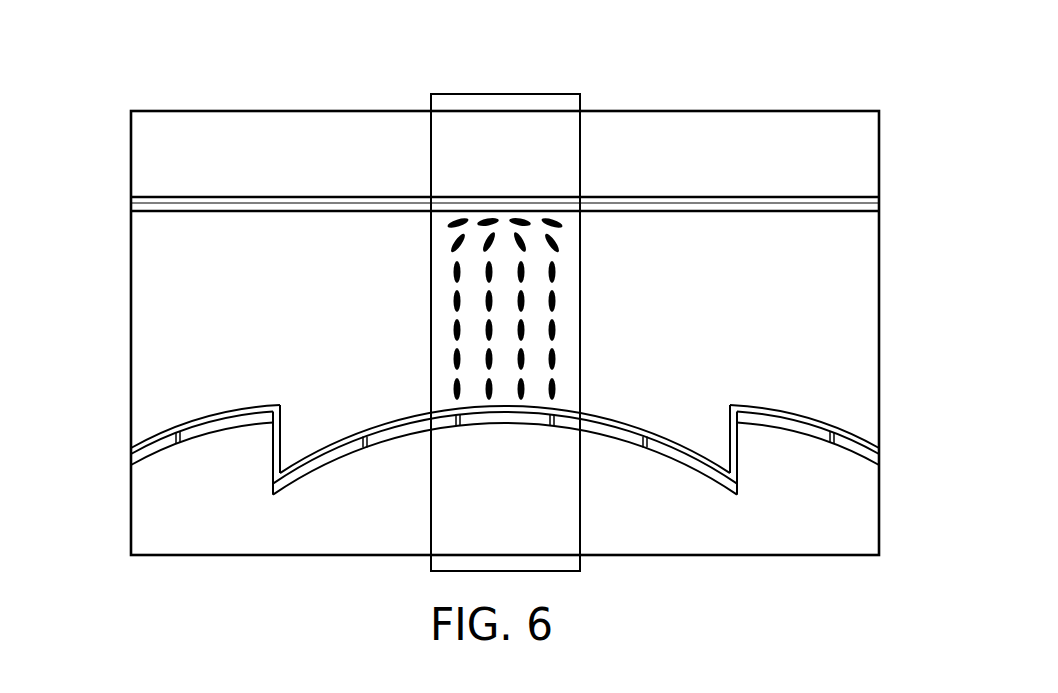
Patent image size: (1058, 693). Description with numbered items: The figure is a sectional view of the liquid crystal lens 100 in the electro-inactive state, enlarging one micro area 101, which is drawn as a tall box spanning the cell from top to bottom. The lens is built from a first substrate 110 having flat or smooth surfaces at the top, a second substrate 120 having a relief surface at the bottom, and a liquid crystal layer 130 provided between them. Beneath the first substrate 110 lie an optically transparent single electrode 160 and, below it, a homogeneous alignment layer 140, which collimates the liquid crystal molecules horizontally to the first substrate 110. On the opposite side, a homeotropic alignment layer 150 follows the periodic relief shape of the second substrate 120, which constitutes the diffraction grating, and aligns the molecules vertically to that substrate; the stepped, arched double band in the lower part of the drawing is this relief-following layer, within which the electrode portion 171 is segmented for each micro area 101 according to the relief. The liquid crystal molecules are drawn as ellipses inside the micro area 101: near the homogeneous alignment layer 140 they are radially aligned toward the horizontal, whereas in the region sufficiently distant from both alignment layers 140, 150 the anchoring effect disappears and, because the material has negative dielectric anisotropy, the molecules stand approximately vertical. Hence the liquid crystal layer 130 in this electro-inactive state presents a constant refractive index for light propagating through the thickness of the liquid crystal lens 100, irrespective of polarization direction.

The liquid crystal lens 100 is at (103, 83).
The micro area 101 is at (598, 73).
The first substrate 110 is at (860, 162).
The second substrate 120 is at (860, 509).
The liquid crystal layer 130 is at (860, 324).
The homogeneous alignment layer 140 is at (630, 223).
The homeotropic alignment layer 150 is at (632, 412).
The optically transparent single electrode 160 is at (760, 182).
The electrode portion 171 is at (768, 435).